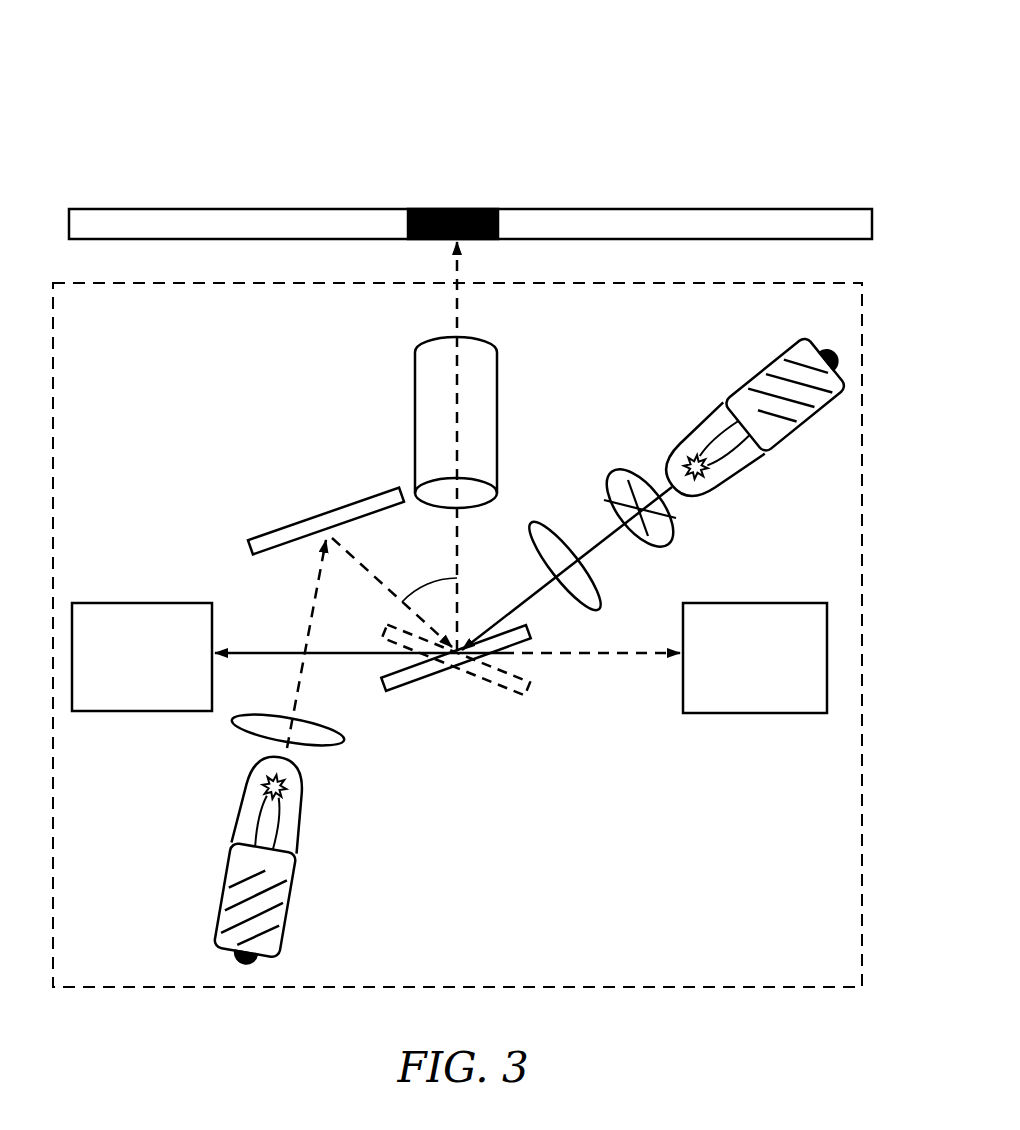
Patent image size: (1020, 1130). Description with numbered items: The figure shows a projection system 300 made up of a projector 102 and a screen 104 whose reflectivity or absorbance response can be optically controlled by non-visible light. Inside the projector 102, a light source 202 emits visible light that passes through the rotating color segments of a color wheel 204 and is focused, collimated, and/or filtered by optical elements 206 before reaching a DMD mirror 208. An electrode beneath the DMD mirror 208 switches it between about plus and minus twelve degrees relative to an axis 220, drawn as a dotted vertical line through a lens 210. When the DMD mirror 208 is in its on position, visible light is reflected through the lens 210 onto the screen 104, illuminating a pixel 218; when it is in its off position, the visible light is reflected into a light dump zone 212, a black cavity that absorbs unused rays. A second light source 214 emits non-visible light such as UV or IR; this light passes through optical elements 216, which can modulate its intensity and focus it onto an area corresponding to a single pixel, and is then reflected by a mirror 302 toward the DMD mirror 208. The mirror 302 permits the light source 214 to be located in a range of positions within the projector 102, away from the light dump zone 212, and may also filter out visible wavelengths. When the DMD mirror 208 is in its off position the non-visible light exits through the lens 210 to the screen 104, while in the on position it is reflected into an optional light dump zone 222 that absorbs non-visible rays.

The projection system 300 is at (670, 96).
The projector 102 is at (457, 635).
The screen 104 is at (172, 208).
The pixel 218 is at (485, 207).
The axis 220 is at (455, 288).
The lens 210 is at (497, 353).
The light source 202 is at (740, 392).
The color wheel 204 is at (615, 477).
The optical elements 206 is at (603, 602).
The DMD mirror 208 is at (497, 692).
The mirror 302 is at (288, 527).
The light dump zone 212 is at (287, 657).
The light dump zone 222 is at (665, 658).
The optical elements 216 is at (235, 720).
The light source 214 is at (230, 848).